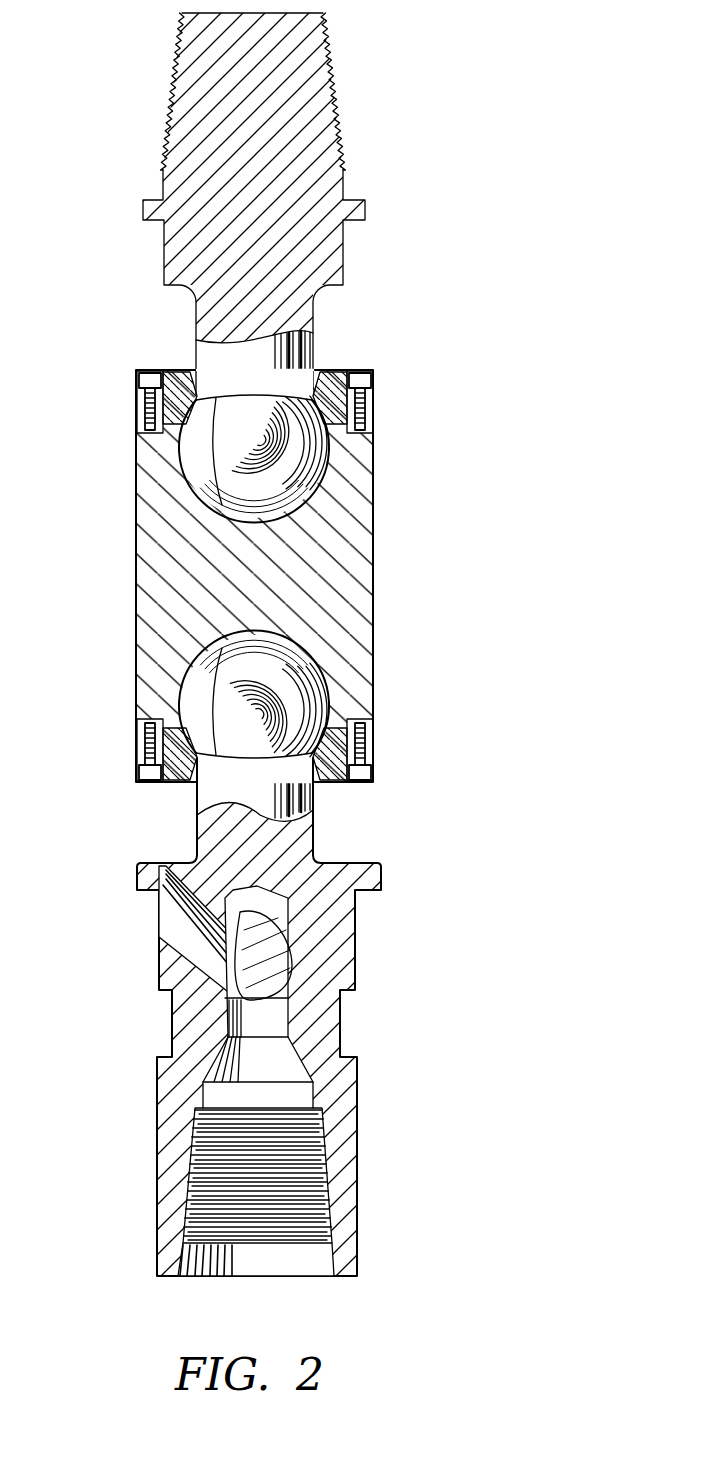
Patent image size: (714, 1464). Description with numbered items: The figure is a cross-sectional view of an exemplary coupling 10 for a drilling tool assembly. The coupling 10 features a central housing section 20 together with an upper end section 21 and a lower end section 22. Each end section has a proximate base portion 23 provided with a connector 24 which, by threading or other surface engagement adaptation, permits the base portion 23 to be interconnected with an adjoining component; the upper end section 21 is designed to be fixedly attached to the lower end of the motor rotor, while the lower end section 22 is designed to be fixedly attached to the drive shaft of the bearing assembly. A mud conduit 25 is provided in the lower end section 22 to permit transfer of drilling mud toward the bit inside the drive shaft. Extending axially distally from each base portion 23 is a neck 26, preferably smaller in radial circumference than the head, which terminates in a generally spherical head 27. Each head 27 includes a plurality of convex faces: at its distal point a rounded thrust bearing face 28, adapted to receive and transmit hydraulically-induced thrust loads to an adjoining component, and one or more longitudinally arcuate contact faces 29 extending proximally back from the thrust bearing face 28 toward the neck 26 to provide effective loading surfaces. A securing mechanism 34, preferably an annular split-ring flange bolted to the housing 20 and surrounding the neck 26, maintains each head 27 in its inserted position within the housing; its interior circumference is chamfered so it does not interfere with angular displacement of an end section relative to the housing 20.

The coupling 10 is at (108, 542).
The central housing section 20 is at (373, 587).
The upper end section 21 is at (343, 173).
The lower end section 22 is at (355, 953).
The base portion 23 is at (183, 174).
The connector 24 is at (338, 77).
The mud conduit 25 is at (172, 924).
The neck 26 is at (315, 313).
The spherical head 27 is at (315, 442).
The thrust bearing face 28 is at (287, 500).
The contact faces 29 is at (205, 462).
The securing mechanism 34 is at (334, 372).